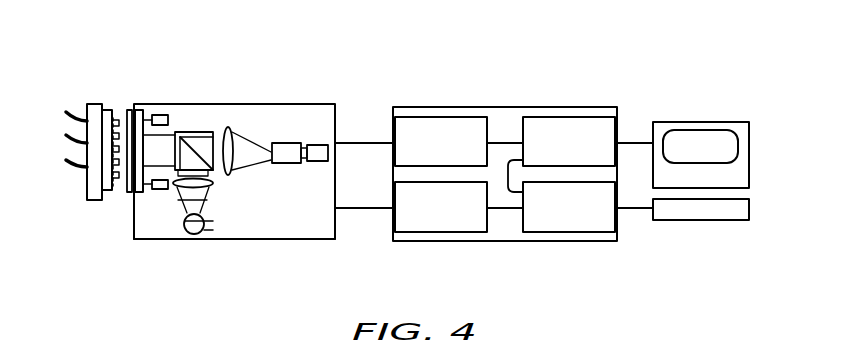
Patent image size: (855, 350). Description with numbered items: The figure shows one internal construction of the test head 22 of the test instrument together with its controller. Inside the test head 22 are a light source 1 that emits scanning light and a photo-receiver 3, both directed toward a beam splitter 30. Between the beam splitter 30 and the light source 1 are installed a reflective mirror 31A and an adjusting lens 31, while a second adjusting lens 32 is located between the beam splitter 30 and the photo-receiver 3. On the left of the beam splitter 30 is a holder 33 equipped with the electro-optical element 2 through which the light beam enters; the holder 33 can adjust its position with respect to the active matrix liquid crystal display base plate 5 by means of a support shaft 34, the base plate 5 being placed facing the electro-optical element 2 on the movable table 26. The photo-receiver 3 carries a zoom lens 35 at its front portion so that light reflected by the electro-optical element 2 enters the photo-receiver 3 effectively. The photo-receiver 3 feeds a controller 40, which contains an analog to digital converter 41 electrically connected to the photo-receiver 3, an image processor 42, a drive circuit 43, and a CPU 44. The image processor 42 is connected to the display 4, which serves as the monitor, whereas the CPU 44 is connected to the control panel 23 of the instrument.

The light source 1 is at (217, 243).
The electro-optical element 2 is at (131, 110).
The photo-receiver 3 is at (317, 145).
The monitor 4 is at (707, 122).
The liquid crystal display base plate 5 is at (107, 193).
The test head 22 is at (292, 243).
The control panel 23 is at (708, 222).
The table 26 is at (91, 193).
The beam splitter 30 is at (199, 140).
The adjusting lens 31 is at (207, 197).
The reflective mirror 31A is at (182, 202).
The adjusting lens 32 is at (232, 172).
The holder 33 is at (131, 193).
The support shaft 34 is at (148, 115).
The zoom lens 35 is at (286, 147).
The controller 40 is at (489, 100).
The A/D converter 41 is at (427, 124).
The image processor 42 is at (553, 128).
The drive circuit 43 is at (460, 223).
The CPU 44 is at (587, 222).